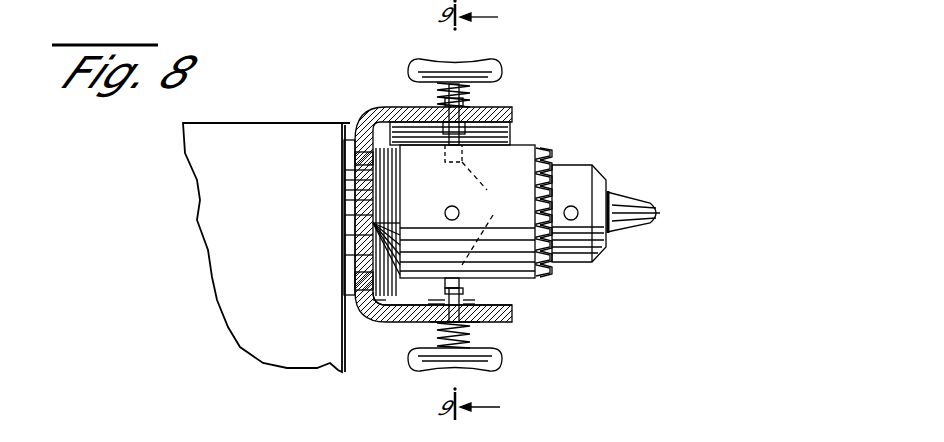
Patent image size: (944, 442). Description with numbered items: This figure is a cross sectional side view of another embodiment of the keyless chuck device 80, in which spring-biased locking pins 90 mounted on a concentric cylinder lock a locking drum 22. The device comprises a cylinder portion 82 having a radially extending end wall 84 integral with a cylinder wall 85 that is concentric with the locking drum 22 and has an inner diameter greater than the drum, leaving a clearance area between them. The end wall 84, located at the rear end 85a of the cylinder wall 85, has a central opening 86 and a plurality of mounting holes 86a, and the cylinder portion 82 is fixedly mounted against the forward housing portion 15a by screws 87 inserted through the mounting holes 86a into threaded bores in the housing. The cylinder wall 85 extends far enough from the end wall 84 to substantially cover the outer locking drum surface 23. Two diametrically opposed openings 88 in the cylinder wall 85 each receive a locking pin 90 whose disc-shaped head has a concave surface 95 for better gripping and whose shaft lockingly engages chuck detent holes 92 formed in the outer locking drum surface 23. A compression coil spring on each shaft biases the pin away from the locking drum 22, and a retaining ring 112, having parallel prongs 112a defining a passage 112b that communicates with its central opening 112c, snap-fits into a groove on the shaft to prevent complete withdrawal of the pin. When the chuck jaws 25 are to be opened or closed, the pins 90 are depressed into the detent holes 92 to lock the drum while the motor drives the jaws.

The forward housing portion 15a is at (343, 247).
The locking drum 22 is at (512, 172).
The outer locking drum surface 23 is at (510, 125).
The chuck jaws 25 is at (630, 200).
The keyless chuck device 80 is at (510, 98).
The cylinder portion 82 is at (416, 342).
The end wall 84 is at (344, 278).
The cylinder wall 85 is at (512, 320).
The rear end 85a is at (382, 318).
The central opening 86 is at (350, 198).
The mounting holes 86a is at (344, 246).
The screws 87 is at (358, 128).
The openings 88 is at (470, 327).
The locking pin 90 is at (510, 48).
The chuck detent holes 92 is at (477, 205).
The concave surface 95 is at (425, 58).
The retaining ring 112 is at (512, 140).
The parallel prongs 112a is at (374, 310).
The passage 112b is at (430, 128).
The central opening 112c is at (443, 292).